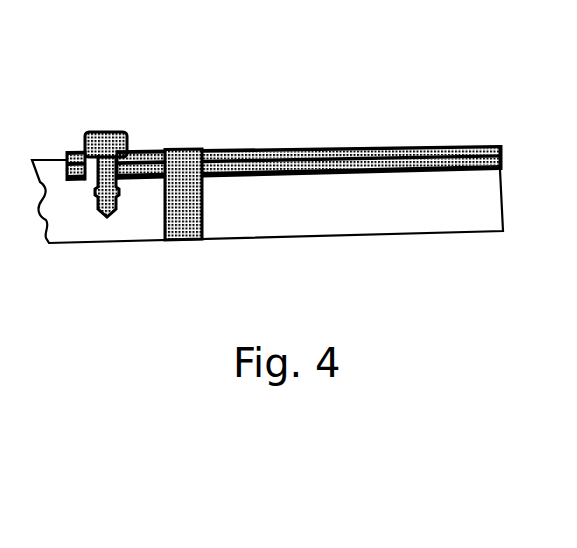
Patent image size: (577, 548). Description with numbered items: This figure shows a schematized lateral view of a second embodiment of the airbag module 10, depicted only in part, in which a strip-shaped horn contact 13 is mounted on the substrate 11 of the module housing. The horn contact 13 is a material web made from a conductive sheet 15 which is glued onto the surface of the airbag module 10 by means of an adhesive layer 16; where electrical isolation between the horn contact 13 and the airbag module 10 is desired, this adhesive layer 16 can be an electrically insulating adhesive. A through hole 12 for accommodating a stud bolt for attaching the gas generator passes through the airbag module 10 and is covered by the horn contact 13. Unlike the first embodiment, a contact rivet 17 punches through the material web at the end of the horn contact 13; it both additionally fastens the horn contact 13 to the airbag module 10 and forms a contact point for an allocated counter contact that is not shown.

The airbag module 10 is at (413, 220).
The substrate 11 is at (472, 172).
The through hole 12 is at (192, 222).
The horn contact 13 is at (337, 133).
The conductive sheet 15 is at (503, 147).
The adhesive layer 16 is at (502, 165).
The contact rivet 17 is at (112, 143).